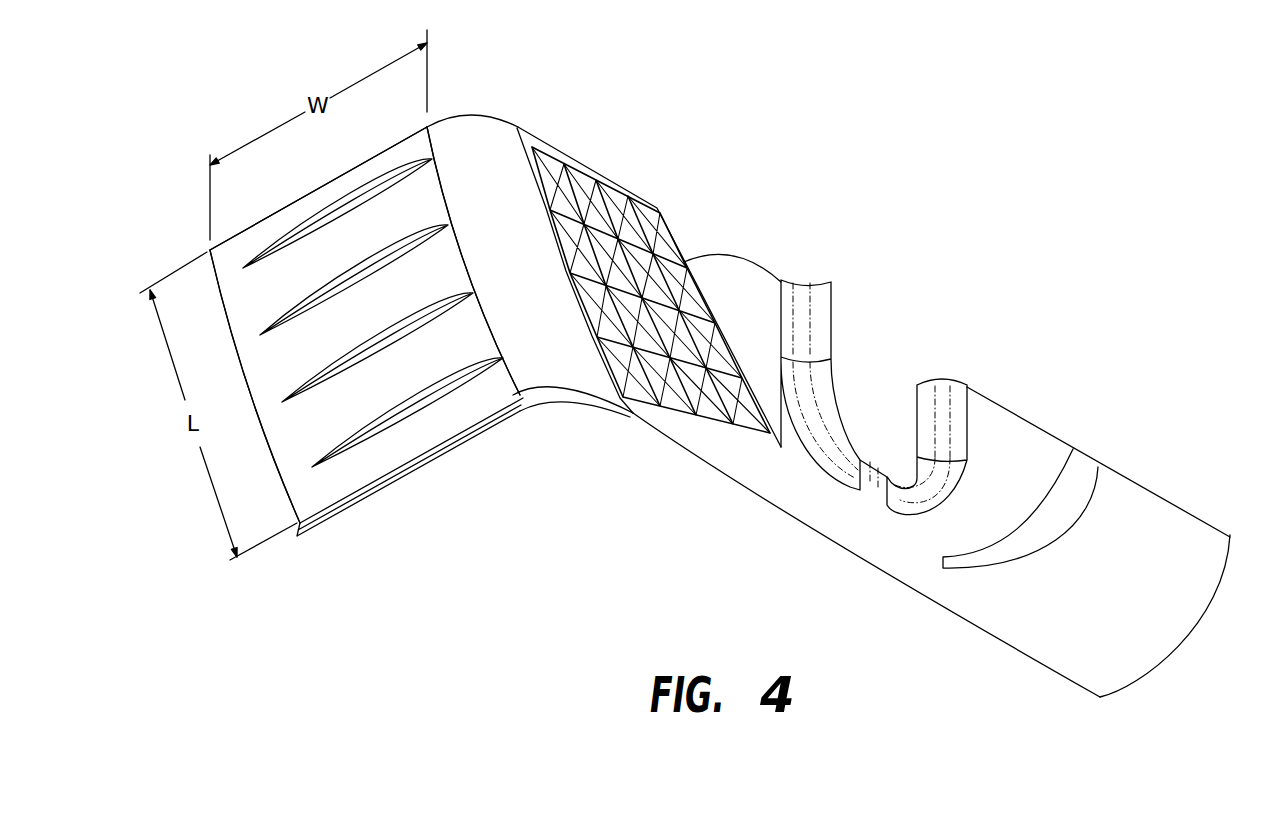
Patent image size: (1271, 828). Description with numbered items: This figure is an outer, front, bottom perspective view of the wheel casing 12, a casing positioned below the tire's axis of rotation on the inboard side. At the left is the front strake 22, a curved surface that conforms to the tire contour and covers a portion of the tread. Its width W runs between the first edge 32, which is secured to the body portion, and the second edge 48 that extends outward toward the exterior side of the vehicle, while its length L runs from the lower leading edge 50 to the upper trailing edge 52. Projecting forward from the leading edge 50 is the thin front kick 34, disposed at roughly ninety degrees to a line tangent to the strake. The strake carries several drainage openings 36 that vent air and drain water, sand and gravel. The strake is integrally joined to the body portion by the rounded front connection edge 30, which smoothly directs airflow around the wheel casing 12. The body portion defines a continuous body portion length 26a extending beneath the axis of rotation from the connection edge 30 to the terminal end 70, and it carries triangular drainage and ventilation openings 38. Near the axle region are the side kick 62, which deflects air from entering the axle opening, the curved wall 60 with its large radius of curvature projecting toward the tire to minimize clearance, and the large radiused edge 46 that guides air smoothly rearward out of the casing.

The wheel casing 12 is at (995, 290).
The front strake 22 is at (290, 453).
The continuous body portion length 26a is at (897, 563).
The rounded front connection edge 30 is at (550, 363).
The first edge 32 is at (445, 197).
The front kick 34 is at (377, 503).
The drainage opening 36 is at (330, 298).
The drainage and ventilation openings 38 is at (662, 233).
The radiused edge 46 is at (928, 415).
The second edge 48 is at (227, 320).
The leading edge 50 is at (400, 460).
The trailing edge 52 is at (341, 177).
The wall 60 is at (745, 288).
The side kick 62 is at (820, 307).
The terminal end 70 is at (1177, 653).